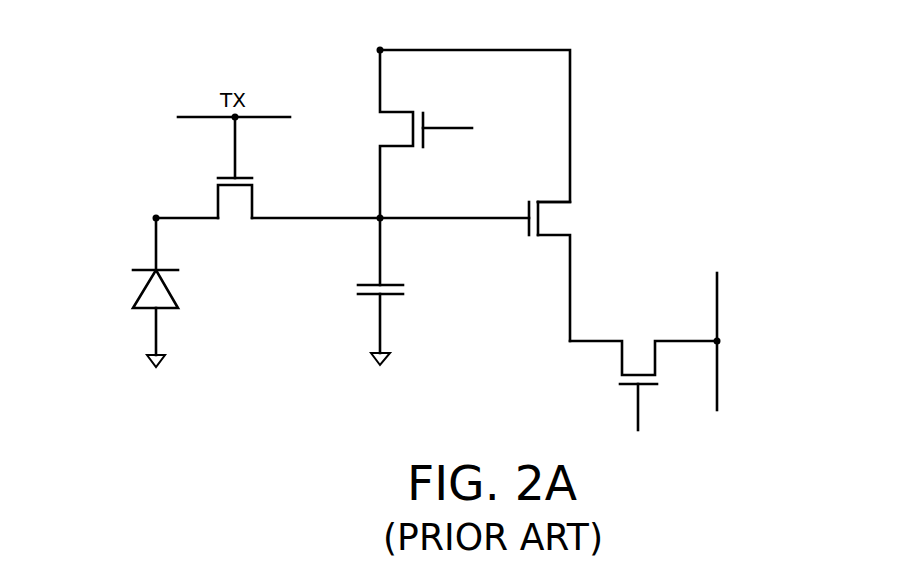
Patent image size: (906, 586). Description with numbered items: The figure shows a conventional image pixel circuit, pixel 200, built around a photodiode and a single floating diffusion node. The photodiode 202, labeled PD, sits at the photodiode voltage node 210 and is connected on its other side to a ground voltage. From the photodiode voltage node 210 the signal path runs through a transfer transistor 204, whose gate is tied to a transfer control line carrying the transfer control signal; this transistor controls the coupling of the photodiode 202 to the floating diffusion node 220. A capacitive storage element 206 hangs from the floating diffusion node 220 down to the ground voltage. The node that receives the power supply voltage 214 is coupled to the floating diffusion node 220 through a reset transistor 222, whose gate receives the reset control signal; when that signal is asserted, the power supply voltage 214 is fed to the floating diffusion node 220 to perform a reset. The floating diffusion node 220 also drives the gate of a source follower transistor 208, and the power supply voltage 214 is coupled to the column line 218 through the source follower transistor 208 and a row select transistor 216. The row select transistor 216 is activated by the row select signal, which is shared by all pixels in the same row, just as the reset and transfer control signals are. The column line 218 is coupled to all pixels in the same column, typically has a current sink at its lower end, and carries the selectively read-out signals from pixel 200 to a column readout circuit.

The pixel 200 is at (143, 37).
The photodiode 202 is at (153, 288).
The transfer transistor 204 is at (252, 200).
The capacitive storage element 206 is at (370, 296).
The source follower transistor 208 is at (556, 230).
The photodiode voltage node 210 is at (156, 218).
The power supply voltage 214 is at (380, 50).
The row select transistor 216 is at (627, 357).
The column line 218 is at (718, 313).
The floating diffusion node 220 is at (380, 220).
The reset transistor 222 is at (397, 142).